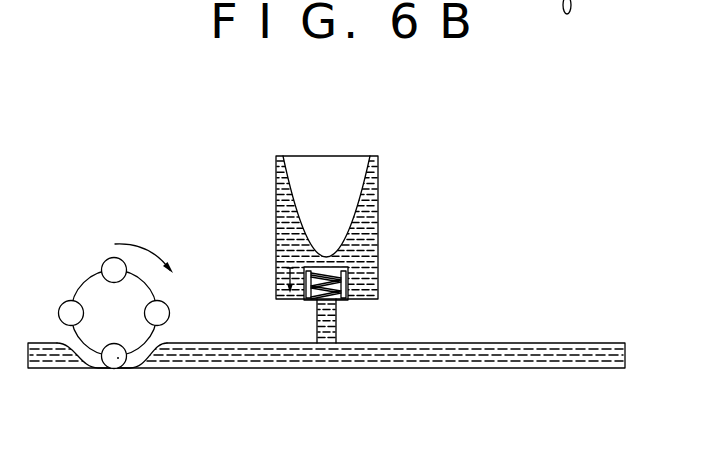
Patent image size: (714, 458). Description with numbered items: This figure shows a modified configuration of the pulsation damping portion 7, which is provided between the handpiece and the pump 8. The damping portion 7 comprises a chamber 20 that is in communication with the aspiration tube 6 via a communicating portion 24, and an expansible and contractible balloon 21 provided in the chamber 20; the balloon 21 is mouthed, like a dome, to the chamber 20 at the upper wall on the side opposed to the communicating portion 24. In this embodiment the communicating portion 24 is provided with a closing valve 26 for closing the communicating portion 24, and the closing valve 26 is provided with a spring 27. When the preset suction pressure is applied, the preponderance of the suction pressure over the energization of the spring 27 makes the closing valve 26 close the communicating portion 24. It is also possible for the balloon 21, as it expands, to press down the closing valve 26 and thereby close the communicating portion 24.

The aspiration tube 6 is at (555, 362).
The pulsation damping portion 7 is at (400, 145).
The pump 8 is at (78, 255).
The chamber 20 is at (378, 207).
The balloon 21 is at (297, 213).
The communicating portion 24 is at (305, 324).
The closing valve 26 is at (348, 273).
The spring 27 is at (338, 290).